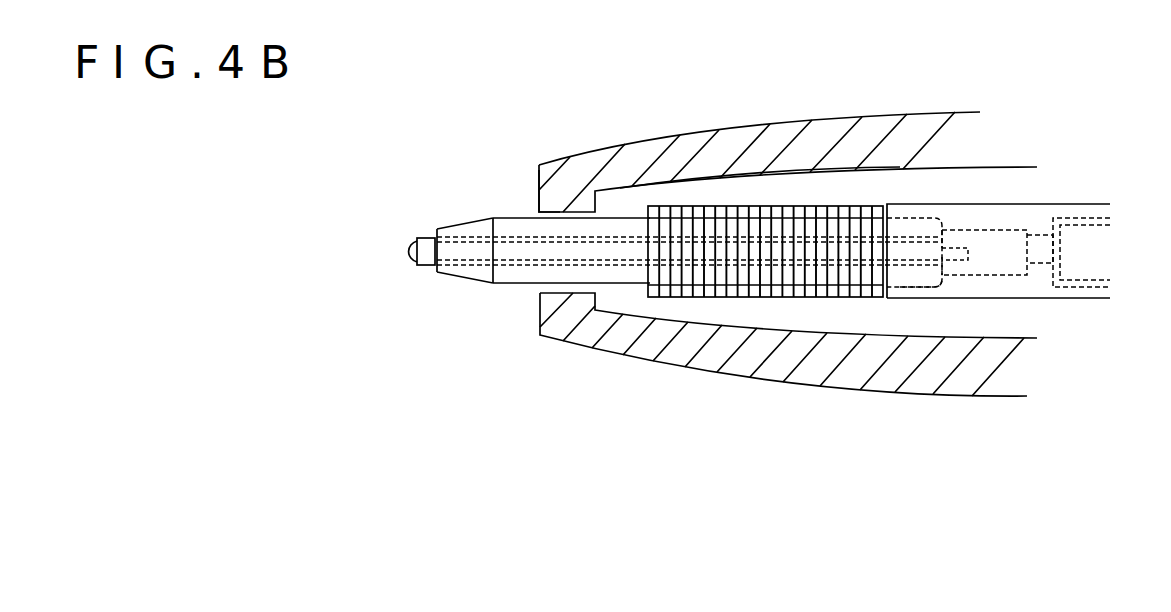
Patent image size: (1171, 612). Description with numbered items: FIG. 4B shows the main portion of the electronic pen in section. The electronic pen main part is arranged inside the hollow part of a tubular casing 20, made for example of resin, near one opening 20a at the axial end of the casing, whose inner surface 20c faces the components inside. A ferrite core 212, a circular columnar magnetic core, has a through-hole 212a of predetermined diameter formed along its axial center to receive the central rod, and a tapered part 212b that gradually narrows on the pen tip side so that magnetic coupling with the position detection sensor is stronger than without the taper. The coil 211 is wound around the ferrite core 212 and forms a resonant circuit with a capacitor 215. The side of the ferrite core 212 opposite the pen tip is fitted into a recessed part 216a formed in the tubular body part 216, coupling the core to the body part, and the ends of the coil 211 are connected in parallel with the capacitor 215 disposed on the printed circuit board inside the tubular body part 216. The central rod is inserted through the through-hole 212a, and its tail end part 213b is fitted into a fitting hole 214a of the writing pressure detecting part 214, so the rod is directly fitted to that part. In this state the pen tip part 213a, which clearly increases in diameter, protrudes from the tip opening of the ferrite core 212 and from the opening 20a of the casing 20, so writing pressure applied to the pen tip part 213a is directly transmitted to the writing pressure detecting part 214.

The tubular casing 20 is at (782, 140).
The opening 20a is at (540, 214).
The inner surface of sheath 20c is at (718, 193).
The coil 211 is at (763, 297).
The ferrite core 212 is at (623, 215).
The through-hole 212a is at (517, 268).
The tapered part 212b is at (453, 278).
The pen tip part 213a is at (410, 237).
The tail end part 213b is at (960, 248).
The writing pressure detecting part 214 is at (1010, 263).
The fitting hole 214a is at (958, 260).
The capacitor 215 is at (1080, 267).
The tubular body part 216 is at (913, 203).
The recessed part 216a is at (918, 287).